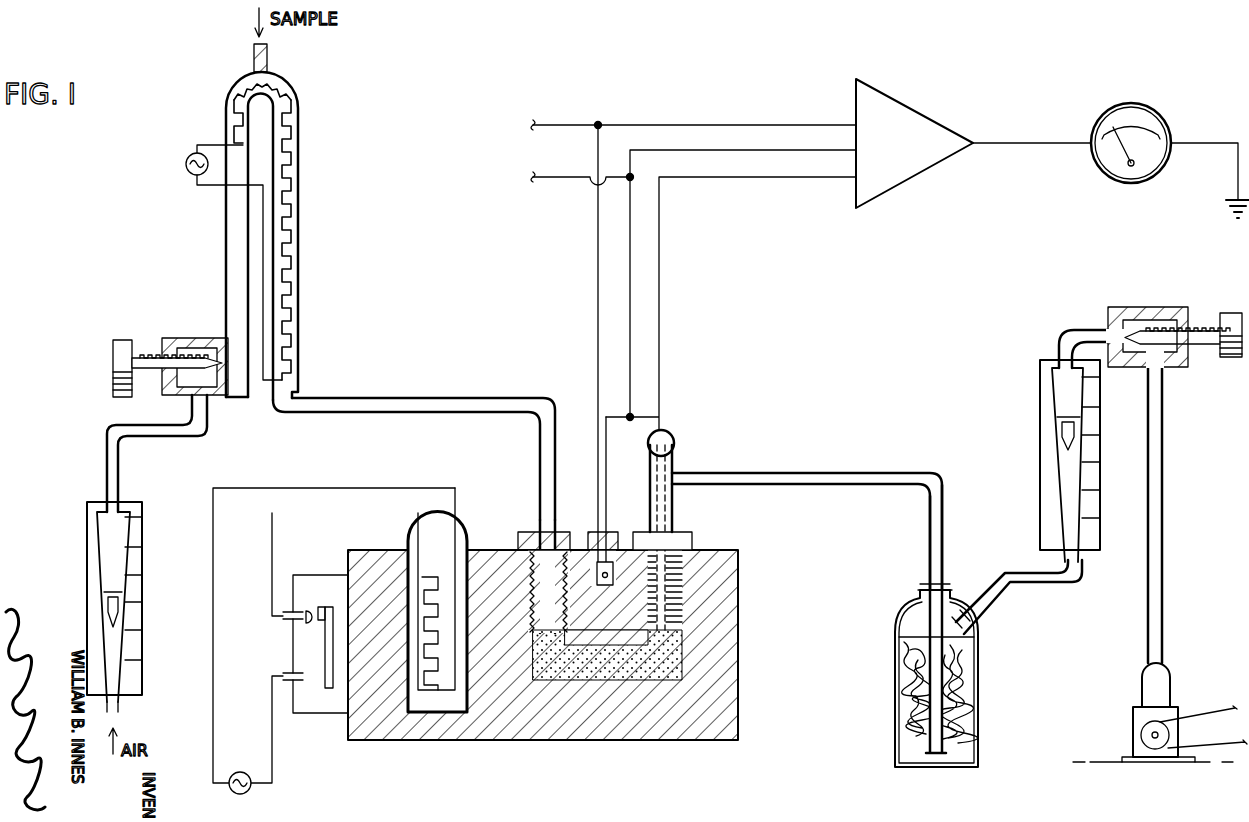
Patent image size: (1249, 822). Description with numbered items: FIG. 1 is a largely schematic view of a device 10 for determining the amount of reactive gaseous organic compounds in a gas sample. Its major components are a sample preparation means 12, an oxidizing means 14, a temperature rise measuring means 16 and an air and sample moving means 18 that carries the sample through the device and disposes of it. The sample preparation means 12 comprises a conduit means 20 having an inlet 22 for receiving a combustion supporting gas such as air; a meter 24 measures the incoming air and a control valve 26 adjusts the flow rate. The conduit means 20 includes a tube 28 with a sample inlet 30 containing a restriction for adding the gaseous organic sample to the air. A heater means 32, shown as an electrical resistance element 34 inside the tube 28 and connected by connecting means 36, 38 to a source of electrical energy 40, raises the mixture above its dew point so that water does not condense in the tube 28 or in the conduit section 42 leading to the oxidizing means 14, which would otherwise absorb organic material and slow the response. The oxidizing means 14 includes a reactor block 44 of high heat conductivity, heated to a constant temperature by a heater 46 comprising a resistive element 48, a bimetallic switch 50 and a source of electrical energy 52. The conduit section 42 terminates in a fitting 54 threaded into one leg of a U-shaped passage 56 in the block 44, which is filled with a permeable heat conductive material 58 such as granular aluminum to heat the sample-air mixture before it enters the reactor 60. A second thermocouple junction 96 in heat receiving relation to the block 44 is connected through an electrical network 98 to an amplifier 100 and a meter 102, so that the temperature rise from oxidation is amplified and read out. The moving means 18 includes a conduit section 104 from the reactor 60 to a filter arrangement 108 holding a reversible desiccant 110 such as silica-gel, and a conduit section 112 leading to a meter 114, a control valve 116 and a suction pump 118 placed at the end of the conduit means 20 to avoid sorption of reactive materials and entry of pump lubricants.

The device 10 is at (775, 86).
The sample preparation means 12 is at (499, 342).
The oxidizing means 14 is at (697, 443).
The temperature rise measuring means 16 is at (901, 88).
The air and sample moving means 18 is at (1091, 295).
The conduit means 20 is at (404, 398).
The inlet 22 is at (117, 710).
The meter 24 is at (141, 557).
The control valve 26 is at (194, 340).
The tube 28 is at (300, 196).
The sample inlet 30 is at (255, 51).
The heater means 32 is at (285, 100).
The electrical resistance element 34 is at (298, 144).
The connecting means 36 is at (207, 145).
The connecting means 38 is at (204, 185).
The source of electrical energy 40 is at (185, 164).
The conduit section 42 is at (466, 398).
The reactor block 44 is at (521, 740).
The heater 46 is at (462, 530).
The resistive element 48 is at (439, 574).
The bimetallic switch 50 is at (330, 605).
The source of electrical energy 52 is at (241, 771).
The fitting 54 is at (522, 537).
The U-shaped passage 56 is at (586, 562).
The permeable heat conductive material 58 is at (612, 680).
The reactor 60 is at (690, 518).
The second thermocouple junction 96 is at (607, 570).
The electrical network 98 is at (666, 124).
The amplifier 100 is at (906, 157).
The meter 102 is at (1128, 108).
The conduit section 104 is at (816, 473).
The filter arrangement 108 is at (978, 627).
The reversible desiccant 110 is at (963, 709).
The conduit section 112 is at (990, 576).
The meter 114 is at (1040, 410).
The control valve 116 is at (1152, 307).
The suction pump 118 is at (1144, 692).